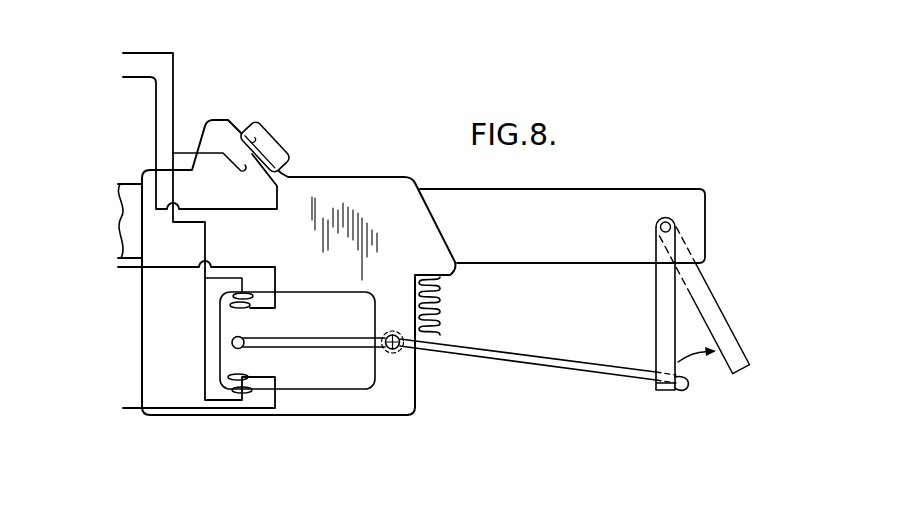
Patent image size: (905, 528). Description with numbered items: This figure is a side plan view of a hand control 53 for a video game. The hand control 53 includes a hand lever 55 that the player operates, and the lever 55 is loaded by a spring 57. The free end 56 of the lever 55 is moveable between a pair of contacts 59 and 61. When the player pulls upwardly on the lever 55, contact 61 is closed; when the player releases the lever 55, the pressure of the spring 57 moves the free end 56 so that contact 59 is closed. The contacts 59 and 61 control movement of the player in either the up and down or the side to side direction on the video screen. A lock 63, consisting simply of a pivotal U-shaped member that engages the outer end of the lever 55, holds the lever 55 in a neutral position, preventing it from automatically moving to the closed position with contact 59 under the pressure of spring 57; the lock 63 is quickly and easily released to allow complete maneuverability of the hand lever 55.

The hand control 53 is at (405, 428).
The hand lever 55 is at (550, 352).
The free end 56 is at (232, 340).
The spring 57 is at (442, 310).
The contact 59 is at (245, 307).
The contact 61 is at (243, 376).
The lock 63 is at (663, 393).